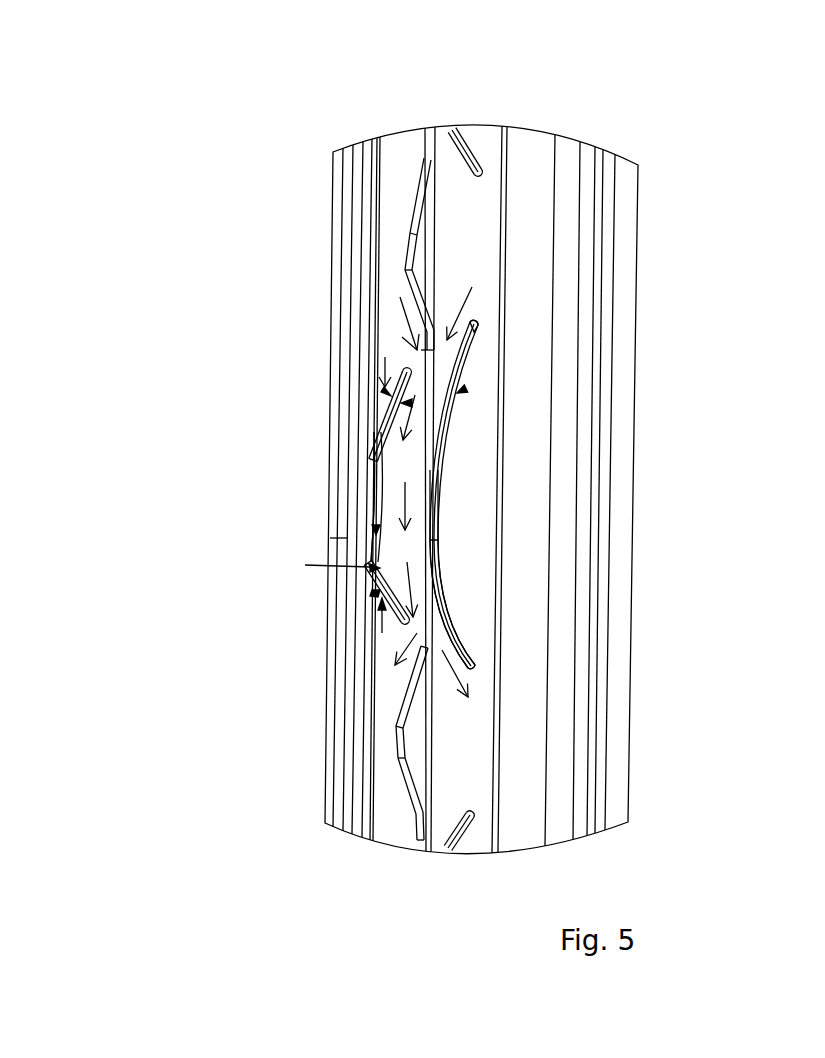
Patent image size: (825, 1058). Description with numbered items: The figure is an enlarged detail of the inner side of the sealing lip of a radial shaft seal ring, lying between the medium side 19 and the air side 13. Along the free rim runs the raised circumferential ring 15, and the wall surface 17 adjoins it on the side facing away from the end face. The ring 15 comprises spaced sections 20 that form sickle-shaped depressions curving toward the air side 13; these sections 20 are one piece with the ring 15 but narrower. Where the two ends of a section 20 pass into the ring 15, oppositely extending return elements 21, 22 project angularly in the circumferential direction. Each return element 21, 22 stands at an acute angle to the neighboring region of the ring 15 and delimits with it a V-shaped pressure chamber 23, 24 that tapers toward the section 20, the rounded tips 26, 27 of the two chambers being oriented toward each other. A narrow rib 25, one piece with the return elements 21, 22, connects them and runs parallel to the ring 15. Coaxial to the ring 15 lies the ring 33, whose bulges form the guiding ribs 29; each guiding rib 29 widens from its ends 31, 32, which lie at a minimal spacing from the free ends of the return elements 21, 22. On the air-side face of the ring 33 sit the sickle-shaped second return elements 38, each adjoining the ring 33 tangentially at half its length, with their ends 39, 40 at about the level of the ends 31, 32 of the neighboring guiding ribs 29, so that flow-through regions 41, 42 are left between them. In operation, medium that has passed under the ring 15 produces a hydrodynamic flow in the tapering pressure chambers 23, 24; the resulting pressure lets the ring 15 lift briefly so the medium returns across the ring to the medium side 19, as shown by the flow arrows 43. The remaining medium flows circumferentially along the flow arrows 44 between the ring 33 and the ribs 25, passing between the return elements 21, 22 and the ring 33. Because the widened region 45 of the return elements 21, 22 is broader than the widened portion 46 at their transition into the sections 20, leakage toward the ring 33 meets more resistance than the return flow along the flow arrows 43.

The air side 13 is at (732, 490).
The circumferential ring 15 is at (365, 168).
The wall surface 17 is at (395, 697).
The medium side 19 is at (168, 498).
The sections 20 is at (398, 468).
The return element 21 is at (392, 382).
The return element 22 is at (398, 618).
The pressure chamber 23 is at (388, 394).
The pressure chamber 24 is at (378, 594).
The rib 25 is at (460, 392).
The rounded tip 26 is at (377, 427).
The rounded tip 27 is at (380, 568).
The guiding rib 29 is at (423, 262).
The end of guiding rib 31 is at (426, 185).
The end of guiding rib 32 is at (425, 332).
The ring 33 is at (424, 840).
The second return element 38 is at (412, 403).
The end of second return element 39 is at (478, 325).
The end of second return element 40 is at (478, 657).
The flow-through region 41 is at (472, 290).
The flow-through region 42 is at (435, 628).
The flow arrows 43 is at (376, 533).
The flow arrows 44 is at (415, 330).
The widened region 45 is at (382, 430).
The widened portion 46 is at (375, 592).